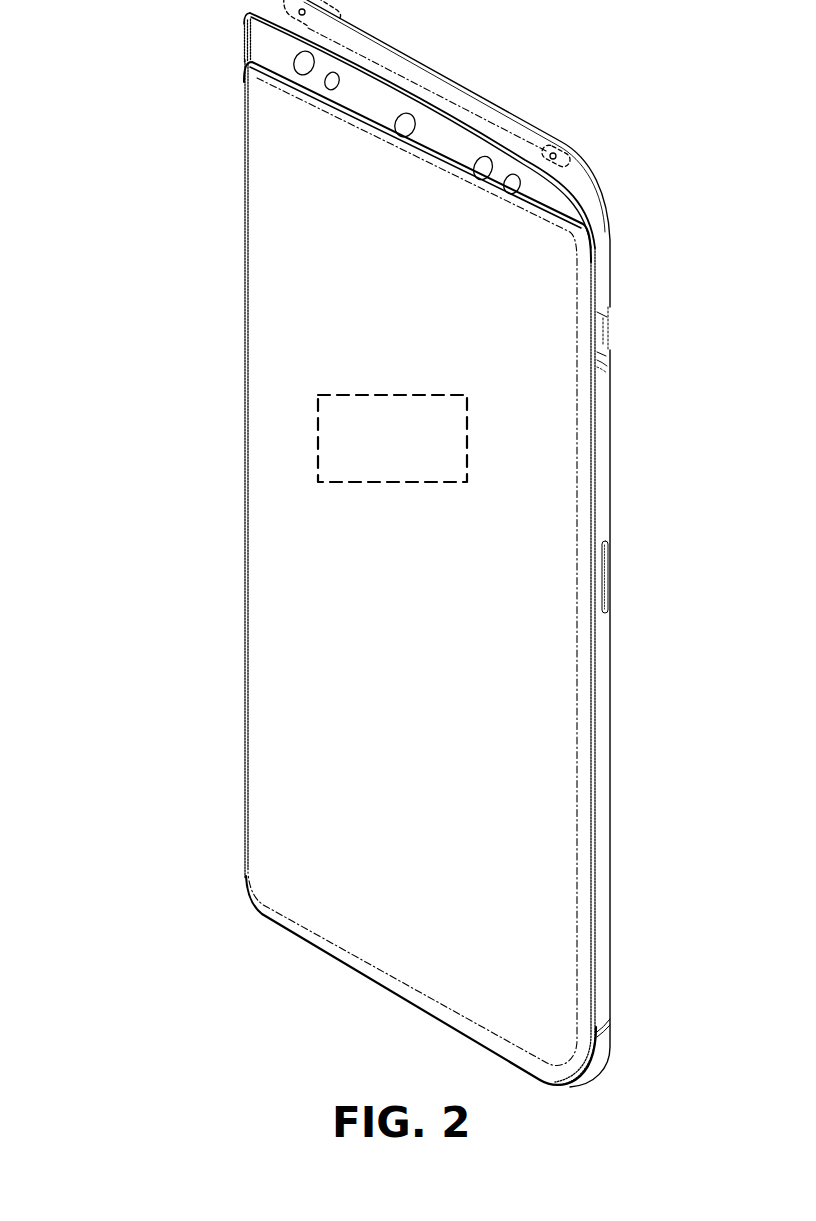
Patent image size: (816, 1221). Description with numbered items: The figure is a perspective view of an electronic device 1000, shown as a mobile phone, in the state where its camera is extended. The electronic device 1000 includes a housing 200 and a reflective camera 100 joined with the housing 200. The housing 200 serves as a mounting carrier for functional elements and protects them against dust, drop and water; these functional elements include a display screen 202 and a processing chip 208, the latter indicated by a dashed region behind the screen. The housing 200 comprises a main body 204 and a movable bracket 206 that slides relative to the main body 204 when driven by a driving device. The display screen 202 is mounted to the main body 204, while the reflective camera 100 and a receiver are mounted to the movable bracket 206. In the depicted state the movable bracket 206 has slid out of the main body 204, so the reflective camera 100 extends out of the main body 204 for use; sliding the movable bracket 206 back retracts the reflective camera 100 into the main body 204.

The electronic device 1000 is at (93, 107).
The reflective camera 100 is at (480, 160).
The housing 200 is at (685, 279).
The display screen 202 is at (560, 753).
The main body 204 is at (604, 386).
The movable bracket 206 is at (603, 306).
The processing chip 208 is at (318, 442).